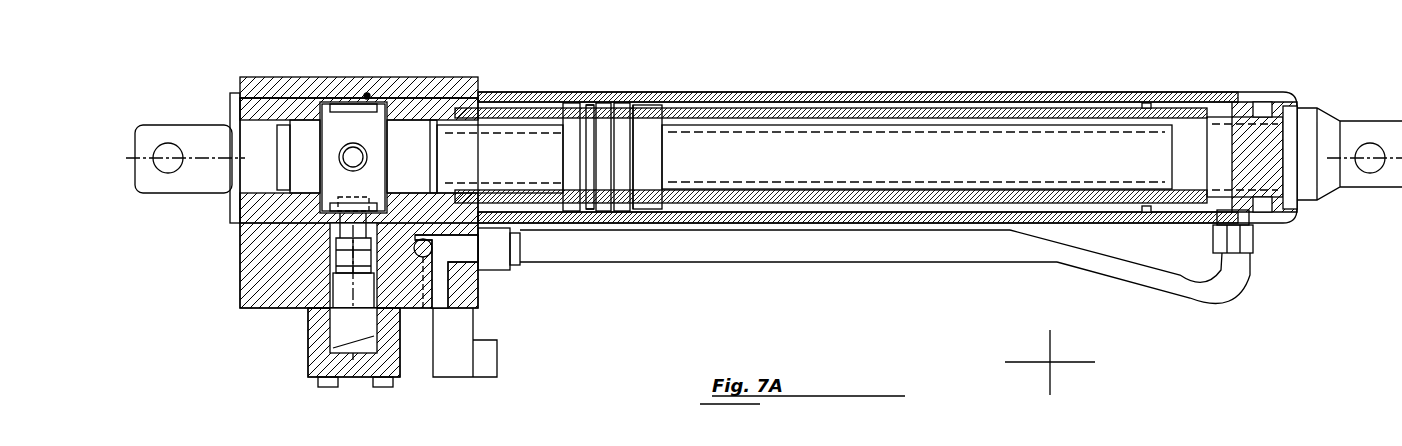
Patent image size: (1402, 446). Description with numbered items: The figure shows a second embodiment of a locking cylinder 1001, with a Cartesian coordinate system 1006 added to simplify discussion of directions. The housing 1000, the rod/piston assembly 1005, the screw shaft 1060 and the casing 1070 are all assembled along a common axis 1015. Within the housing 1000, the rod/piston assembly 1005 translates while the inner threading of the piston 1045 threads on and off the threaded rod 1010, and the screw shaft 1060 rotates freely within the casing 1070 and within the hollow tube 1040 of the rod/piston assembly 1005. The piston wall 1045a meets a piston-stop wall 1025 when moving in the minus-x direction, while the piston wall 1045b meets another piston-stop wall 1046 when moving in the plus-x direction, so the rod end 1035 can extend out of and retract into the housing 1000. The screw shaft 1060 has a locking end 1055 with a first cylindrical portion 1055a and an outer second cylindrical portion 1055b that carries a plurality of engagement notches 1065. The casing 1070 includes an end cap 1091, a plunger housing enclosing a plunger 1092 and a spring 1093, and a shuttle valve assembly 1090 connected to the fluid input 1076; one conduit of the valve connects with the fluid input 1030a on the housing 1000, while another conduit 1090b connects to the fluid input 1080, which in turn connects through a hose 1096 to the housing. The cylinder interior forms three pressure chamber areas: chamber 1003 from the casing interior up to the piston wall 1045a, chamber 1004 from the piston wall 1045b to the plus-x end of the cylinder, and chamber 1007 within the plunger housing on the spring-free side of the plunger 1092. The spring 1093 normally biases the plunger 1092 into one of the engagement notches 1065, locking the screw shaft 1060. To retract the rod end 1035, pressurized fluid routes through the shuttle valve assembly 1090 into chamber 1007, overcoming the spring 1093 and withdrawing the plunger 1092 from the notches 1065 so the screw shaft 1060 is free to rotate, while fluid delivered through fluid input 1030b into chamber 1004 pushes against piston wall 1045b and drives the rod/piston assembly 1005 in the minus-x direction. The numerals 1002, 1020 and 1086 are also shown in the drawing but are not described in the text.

The housing 1000 is at (868, 92).
The locking cylinder 1001 is at (205, 270).
The mounting portion 1002 is at (158, 445).
The pressure chamber area 1003 is at (387, 66).
The pressure chamber area 1004 is at (667, 66).
The rod/piston assembly 1005 is at (972, 117).
The Cartesian coordinate system 1006 is at (1073, 347).
The pressure chamber area 1007 is at (240, 280).
The threaded rod 1010 is at (982, 158).
The common axis 1015 is at (143, 153).
The port 1020 is at (424, 312).
The piston-stop wall 1025 is at (566, 97).
The fluid input 1030a is at (447, 190).
The fluid input 1030b is at (1253, 243).
The rod end 1035 is at (1370, 123).
The hollow tube 1040 is at (1077, 110).
The piston 1045 is at (660, 100).
The piston wall 1045a is at (567, 110).
The piston wall 1045b is at (683, 93).
The piston-stop wall 1046 is at (1137, 93).
The locking end 1055 is at (367, 96).
The first cylindrical portion 1055a is at (297, 148).
The second cylindrical portion 1055b is at (337, 177).
The screw shaft 1060 is at (993, 172).
The engagement notches 1065 is at (350, 147).
The casing 1070 is at (263, 77).
The fluid input 1076 is at (463, 380).
The fluid input 1080 is at (520, 262).
The passage 1086 is at (302, 330).
The shuttle valve assembly 1090 is at (470, 310).
The fluid conduit 1090b is at (455, 262).
The end cap 1091 is at (178, 120).
The plunger 1092 is at (350, 235).
The spring 1093 is at (350, 350).
The hose 1096 is at (1217, 310).